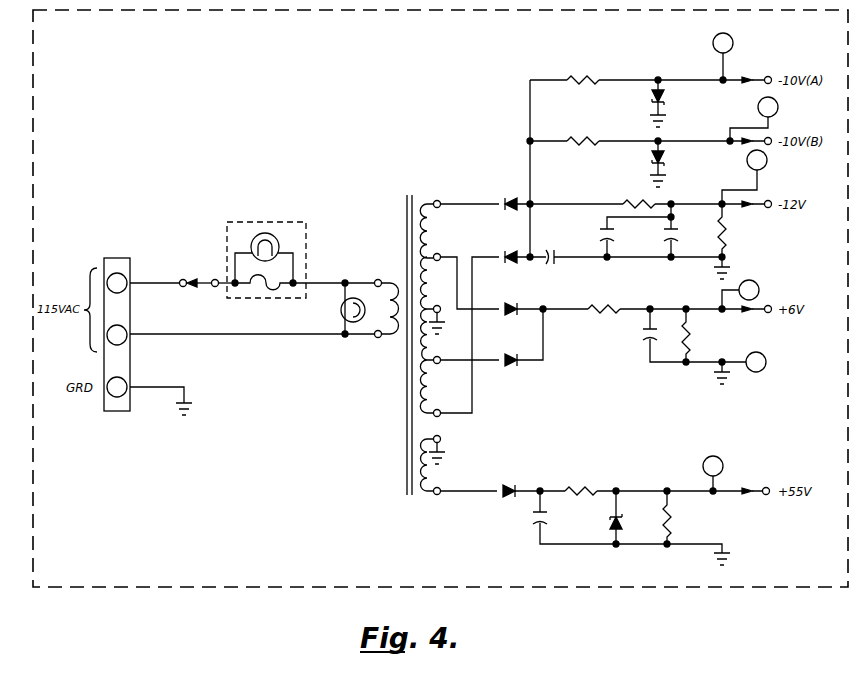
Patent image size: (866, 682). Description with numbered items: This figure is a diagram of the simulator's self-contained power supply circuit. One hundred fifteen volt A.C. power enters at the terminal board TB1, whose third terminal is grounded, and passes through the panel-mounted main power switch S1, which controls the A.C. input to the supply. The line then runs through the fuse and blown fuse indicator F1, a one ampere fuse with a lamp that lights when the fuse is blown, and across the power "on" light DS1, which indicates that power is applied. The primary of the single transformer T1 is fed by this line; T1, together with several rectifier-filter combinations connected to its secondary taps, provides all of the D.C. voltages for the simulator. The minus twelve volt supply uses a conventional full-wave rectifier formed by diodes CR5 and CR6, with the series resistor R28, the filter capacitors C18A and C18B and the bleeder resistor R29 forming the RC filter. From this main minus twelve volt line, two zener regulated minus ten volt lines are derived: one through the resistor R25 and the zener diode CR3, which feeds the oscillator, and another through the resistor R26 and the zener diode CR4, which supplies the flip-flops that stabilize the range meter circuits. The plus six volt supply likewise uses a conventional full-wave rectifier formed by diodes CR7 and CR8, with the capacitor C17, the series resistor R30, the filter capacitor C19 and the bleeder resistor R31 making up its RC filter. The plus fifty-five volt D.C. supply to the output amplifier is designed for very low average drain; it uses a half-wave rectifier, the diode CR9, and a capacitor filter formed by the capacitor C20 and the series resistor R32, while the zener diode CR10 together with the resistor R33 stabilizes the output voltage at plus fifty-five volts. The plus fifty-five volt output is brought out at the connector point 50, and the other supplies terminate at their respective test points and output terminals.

The terminal board TB1 is at (115, 324).
The main power switch S1 is at (203, 283).
The blown fuse indicator F1 is at (262, 234).
The power "on" light DS1 is at (341, 312).
The transformer T1 is at (406, 335).
The zener diode 10V/10W CR3 is at (688, 105).
The zener diode 10V/1W CR4 is at (689, 165).
The rectifier diode CR5 is at (497, 191).
The rectifier diode CR6 is at (493, 242).
The rectifier diode CR7 is at (496, 293).
The rectifier diode CR8 is at (497, 346).
The rectifier diode CR9 is at (495, 478).
The zener diode CR10 is at (596, 517).
The resistor 50 ohm 5W R25 is at (580, 65).
The resistor 150 ohm R26 is at (580, 125).
The resistor 7.5 ohm 10W R28 is at (635, 190).
The resistor 2700 ohm R29 is at (741, 230).
The resistor 22 ohm 2W R30 is at (600, 296).
The resistor 220 ohm R31 is at (701, 335).
The resistor 220 ohm R32 is at (576, 477).
The resistor 20K R33 is at (682, 517).
The capacitor 4000 uF 50V C17 is at (539, 275).
The capacitor 5000 uF 20V C18A is at (601, 238).
The capacitor 5000 uF 20V C18B is at (686, 234).
The capacitor 4000 uF 50V C19 is at (631, 345).
The capacitor 1000 uF 50V C20 is at (507, 521).
The test point 50 is at (713, 473).